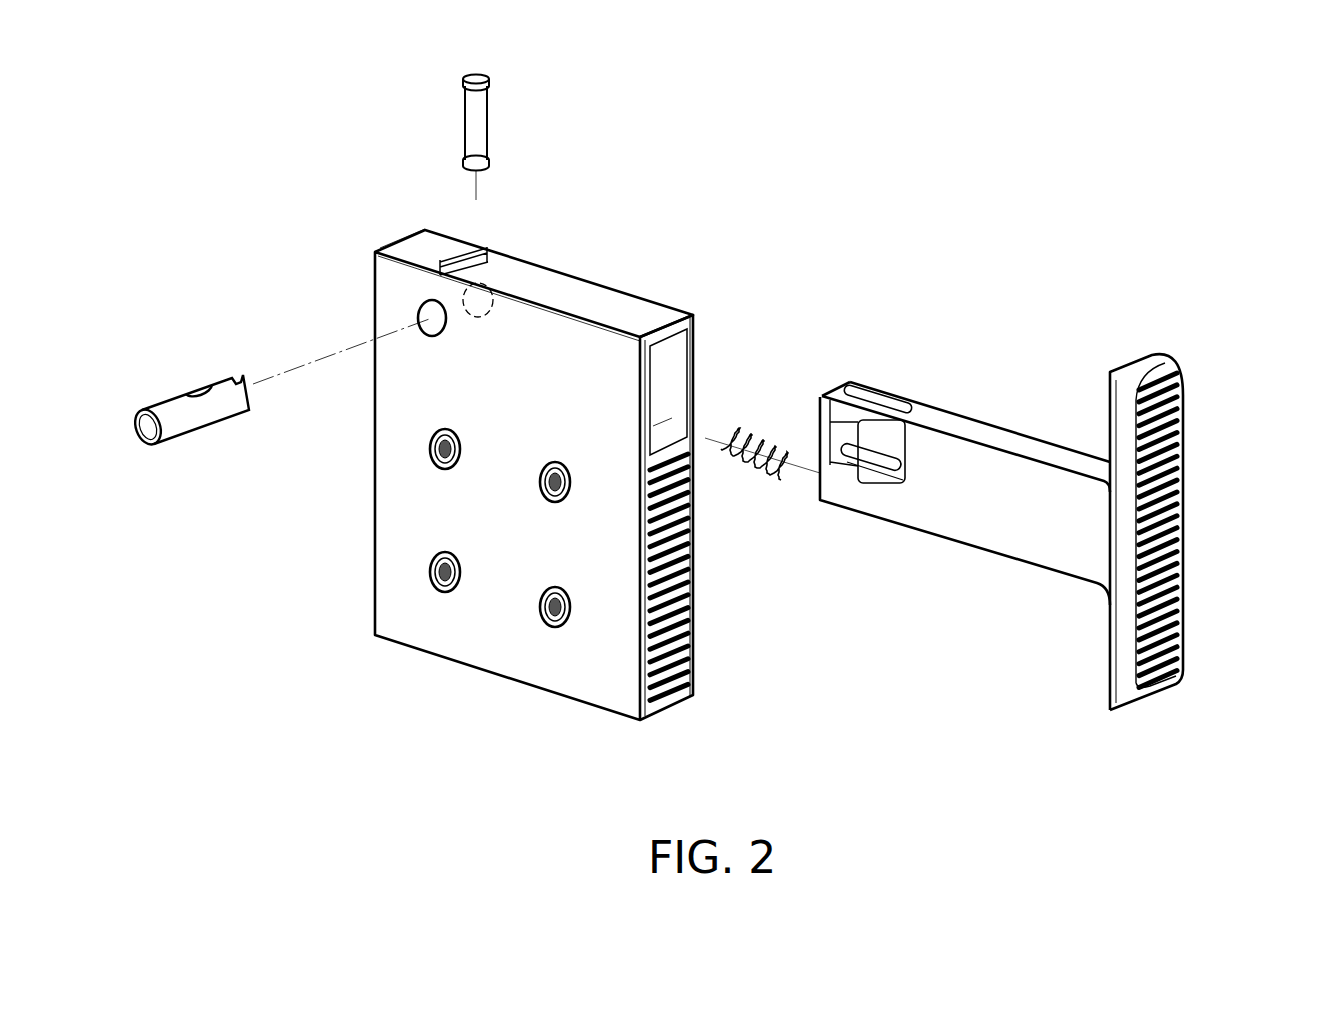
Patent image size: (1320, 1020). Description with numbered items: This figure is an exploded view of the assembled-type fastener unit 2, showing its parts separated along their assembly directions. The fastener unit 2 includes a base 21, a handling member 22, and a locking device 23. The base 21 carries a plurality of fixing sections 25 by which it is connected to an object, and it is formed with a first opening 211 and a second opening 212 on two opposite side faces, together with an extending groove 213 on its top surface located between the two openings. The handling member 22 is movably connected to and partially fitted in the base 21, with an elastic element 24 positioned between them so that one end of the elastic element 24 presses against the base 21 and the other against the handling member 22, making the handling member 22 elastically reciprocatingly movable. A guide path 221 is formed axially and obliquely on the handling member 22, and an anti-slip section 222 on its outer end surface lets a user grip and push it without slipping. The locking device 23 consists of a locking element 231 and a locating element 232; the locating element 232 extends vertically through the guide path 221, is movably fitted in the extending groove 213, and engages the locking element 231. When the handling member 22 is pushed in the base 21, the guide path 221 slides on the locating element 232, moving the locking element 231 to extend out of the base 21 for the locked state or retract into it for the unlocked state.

The assembled-type fastener unit 2 is at (660, 269).
The base 21 is at (697, 346).
The first opening 211 is at (418, 290).
The second opening 212 is at (488, 284).
The extending groove 213 is at (503, 241).
The handling member 22 is at (1027, 397).
The guide path 221 is at (885, 398).
The anti-slip section 222 is at (1184, 413).
The locking device 23 is at (422, 163).
The locking element 231 is at (163, 410).
The locating element 232 is at (480, 116).
The elastic element 24 is at (748, 468).
The fixing sections 25 is at (430, 569).